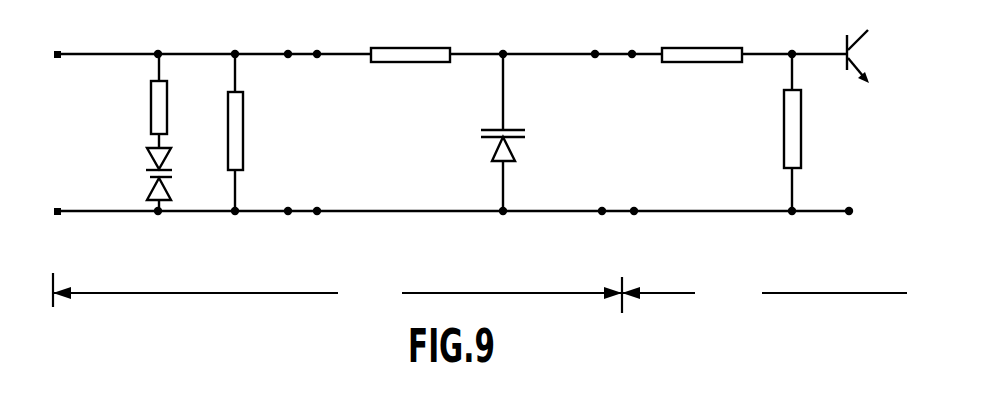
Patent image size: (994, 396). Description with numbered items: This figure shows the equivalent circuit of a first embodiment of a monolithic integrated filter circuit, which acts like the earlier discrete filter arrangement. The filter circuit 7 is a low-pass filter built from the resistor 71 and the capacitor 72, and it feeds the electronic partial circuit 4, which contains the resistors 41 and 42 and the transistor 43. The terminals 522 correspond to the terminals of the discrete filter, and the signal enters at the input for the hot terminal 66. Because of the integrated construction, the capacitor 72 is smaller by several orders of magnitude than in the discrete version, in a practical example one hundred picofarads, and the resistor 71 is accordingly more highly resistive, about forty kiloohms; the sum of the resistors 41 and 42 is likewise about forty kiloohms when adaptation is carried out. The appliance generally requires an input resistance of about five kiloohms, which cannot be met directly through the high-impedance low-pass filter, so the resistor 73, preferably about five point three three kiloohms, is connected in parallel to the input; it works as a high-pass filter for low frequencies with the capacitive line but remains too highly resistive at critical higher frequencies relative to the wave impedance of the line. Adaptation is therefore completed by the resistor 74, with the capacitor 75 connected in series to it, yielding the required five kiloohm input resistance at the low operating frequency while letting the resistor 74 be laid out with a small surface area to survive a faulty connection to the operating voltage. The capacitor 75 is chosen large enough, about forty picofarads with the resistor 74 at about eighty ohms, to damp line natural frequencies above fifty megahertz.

The input for the hot terminal 66 is at (59, 59).
The resistor 74 is at (151, 114).
The capacitor 75 is at (150, 177).
The resistor 73 is at (243, 143).
The terminals 522 is at (303, 57).
The resistor 71 is at (411, 61).
The capacitor 72 is at (481, 133).
The resistor 41 is at (709, 62).
The resistor 42 is at (801, 140).
The transistor 43 is at (858, 43).
The filter circuit 7 is at (337, 293).
The electronic partial circuit 4 is at (764, 292).